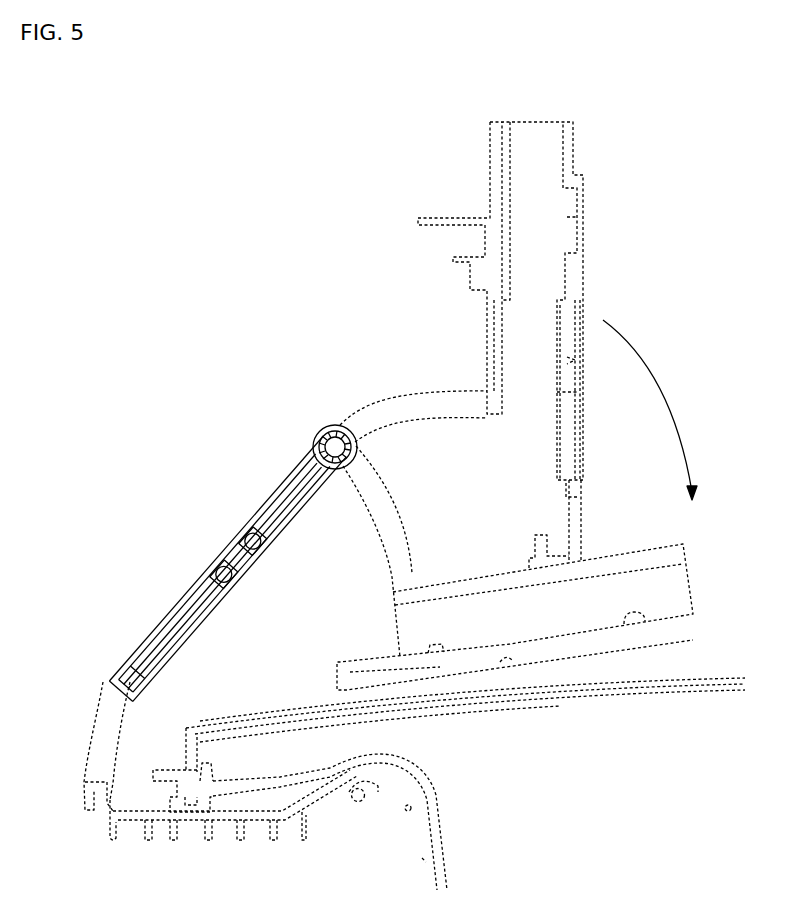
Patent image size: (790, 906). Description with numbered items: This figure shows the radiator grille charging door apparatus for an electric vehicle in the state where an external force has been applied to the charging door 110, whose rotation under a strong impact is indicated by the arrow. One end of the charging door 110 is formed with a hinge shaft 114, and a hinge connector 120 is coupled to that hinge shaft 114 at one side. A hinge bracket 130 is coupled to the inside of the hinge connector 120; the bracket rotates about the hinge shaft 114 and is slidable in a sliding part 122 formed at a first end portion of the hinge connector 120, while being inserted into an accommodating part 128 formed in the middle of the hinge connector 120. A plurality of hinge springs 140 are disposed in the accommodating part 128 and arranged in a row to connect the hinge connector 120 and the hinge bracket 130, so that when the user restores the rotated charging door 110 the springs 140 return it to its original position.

The charging door 110 is at (443, 185).
The hinge shaft 114 is at (333, 438).
The hinge connector 120 is at (172, 601).
The sliding part 122 is at (257, 500).
The accommodating part 128 is at (172, 662).
The hinge bracket 130 is at (293, 497).
The hinge springs 140 is at (192, 600).